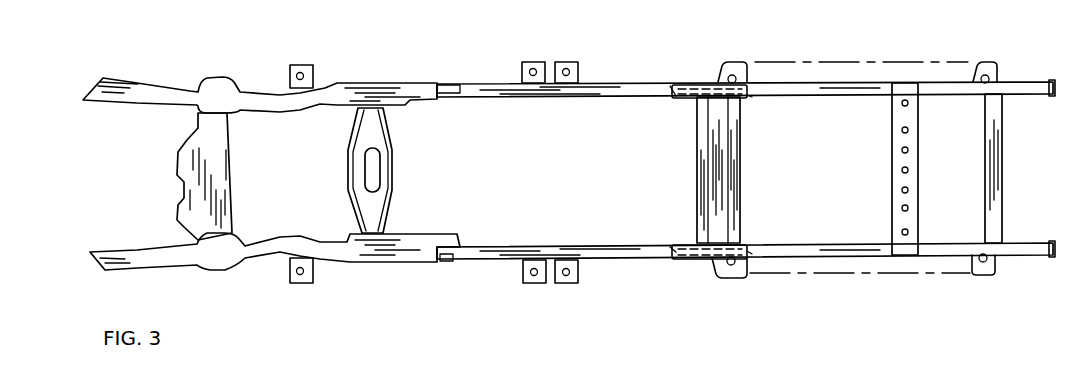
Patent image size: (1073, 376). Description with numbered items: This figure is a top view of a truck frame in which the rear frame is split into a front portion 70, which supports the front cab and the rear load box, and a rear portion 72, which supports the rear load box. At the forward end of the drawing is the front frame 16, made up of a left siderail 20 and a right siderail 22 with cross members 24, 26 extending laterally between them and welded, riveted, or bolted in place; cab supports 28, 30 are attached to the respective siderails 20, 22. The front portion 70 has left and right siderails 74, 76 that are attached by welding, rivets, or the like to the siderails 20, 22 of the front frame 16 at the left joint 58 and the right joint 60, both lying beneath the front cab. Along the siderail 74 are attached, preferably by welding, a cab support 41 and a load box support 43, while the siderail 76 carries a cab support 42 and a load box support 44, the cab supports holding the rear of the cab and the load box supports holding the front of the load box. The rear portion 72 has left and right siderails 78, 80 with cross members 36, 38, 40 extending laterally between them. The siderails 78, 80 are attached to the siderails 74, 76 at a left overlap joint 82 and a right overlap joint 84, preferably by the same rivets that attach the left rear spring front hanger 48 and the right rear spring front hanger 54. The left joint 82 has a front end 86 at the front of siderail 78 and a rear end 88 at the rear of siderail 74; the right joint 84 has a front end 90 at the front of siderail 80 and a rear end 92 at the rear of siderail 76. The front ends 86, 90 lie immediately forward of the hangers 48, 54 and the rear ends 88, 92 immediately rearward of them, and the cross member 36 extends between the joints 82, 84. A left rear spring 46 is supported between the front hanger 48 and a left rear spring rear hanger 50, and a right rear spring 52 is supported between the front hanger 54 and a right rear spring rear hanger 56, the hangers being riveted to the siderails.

The front frame 16 is at (268, 270).
The left siderail 20 is at (325, 240).
The right siderail 22 is at (318, 103).
The cross member 24 is at (212, 177).
The cross member 26 is at (392, 172).
The cab support 28 is at (302, 284).
The cab support 30 is at (300, 68).
The cross member 36 is at (740, 182).
The cross member 38 is at (918, 172).
The cross member 40 is at (1002, 170).
The cab support 41 is at (533, 283).
The cab support 42 is at (533, 62).
The load box support 43 is at (566, 283).
The load box support 44 is at (566, 62).
The left rear spring 46 is at (874, 274).
The left rear spring front hanger 48 is at (733, 278).
The left rear spring rear hanger 50 is at (984, 276).
The right rear spring 52 is at (868, 62).
The right rear spring front hanger 54 is at (733, 70).
The right rear spring rear hanger 56 is at (988, 65).
The joint 58 is at (447, 264).
The right joint 60 is at (450, 82).
The front portion 70 is at (624, 306).
The rear portion 72 is at (821, 288).
The left siderail 74 is at (605, 246).
The right siderail 76 is at (582, 98).
The left siderail 78 is at (860, 246).
The right siderail 80 is at (866, 92).
The left overlap joint 82 is at (698, 259).
The right overlap joint 84 is at (700, 83).
The front end 86 is at (672, 246).
The rear end 88 is at (752, 250).
The front end 90 is at (672, 86).
The rear end 92 is at (750, 92).